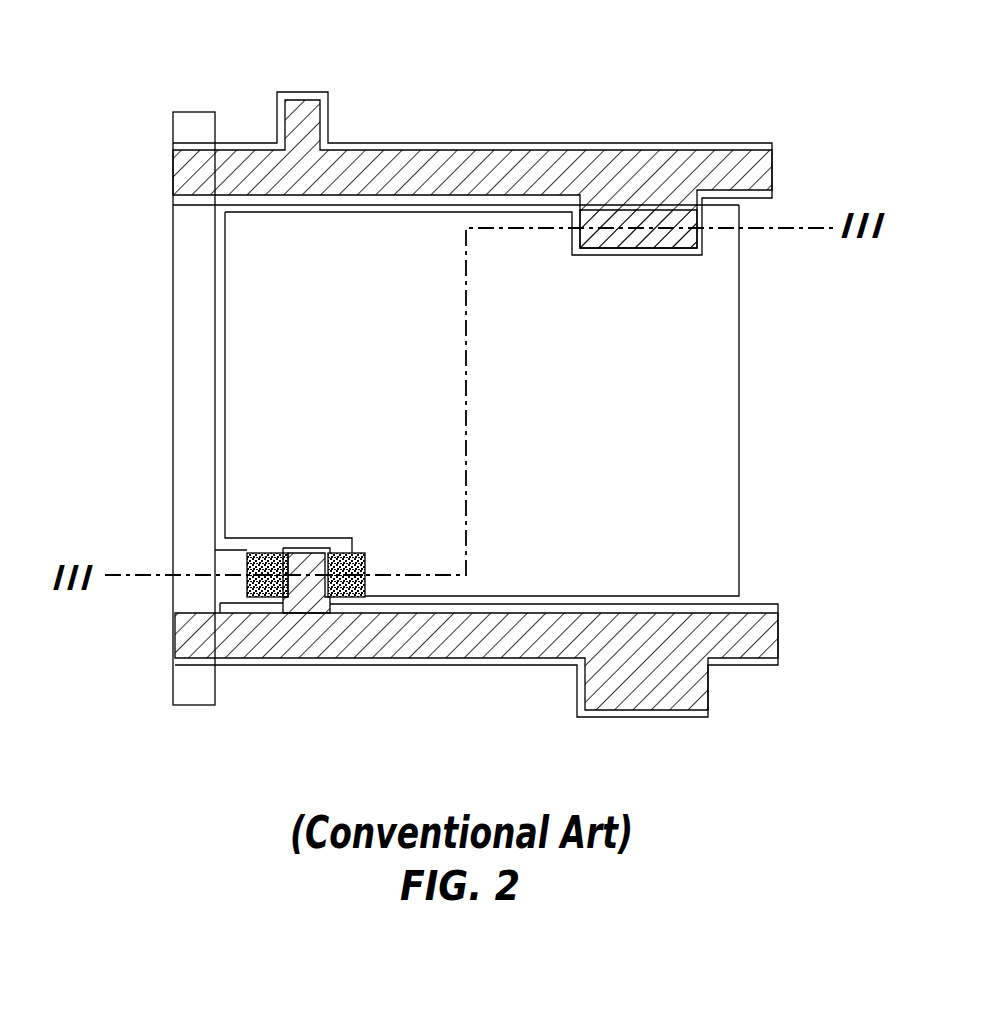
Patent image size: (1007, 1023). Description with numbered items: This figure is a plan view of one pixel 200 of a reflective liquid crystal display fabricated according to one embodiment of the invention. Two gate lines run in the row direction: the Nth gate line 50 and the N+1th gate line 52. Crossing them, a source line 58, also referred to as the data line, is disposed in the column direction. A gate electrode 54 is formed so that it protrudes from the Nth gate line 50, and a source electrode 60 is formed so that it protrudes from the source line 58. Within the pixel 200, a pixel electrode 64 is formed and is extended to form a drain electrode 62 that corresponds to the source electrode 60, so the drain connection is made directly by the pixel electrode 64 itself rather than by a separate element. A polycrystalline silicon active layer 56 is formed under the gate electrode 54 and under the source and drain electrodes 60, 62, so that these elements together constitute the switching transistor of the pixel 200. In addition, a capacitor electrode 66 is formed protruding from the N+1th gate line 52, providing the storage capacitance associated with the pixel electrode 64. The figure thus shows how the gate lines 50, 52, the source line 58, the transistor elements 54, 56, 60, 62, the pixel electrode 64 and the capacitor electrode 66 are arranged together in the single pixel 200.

The pixel 200 is at (232, 82).
The Nth gate line 50 is at (763, 630).
The N+1th gate line 52 is at (472, 163).
The gate electrode 54 is at (312, 597).
The polycrystalline silicon active layer 56 is at (262, 553).
The source line 58 is at (180, 351).
The source electrode 60 is at (240, 600).
The drain electrode 62 is at (360, 593).
The pixel electrode 64 is at (517, 553).
The capacitor electrode 66 is at (645, 243).